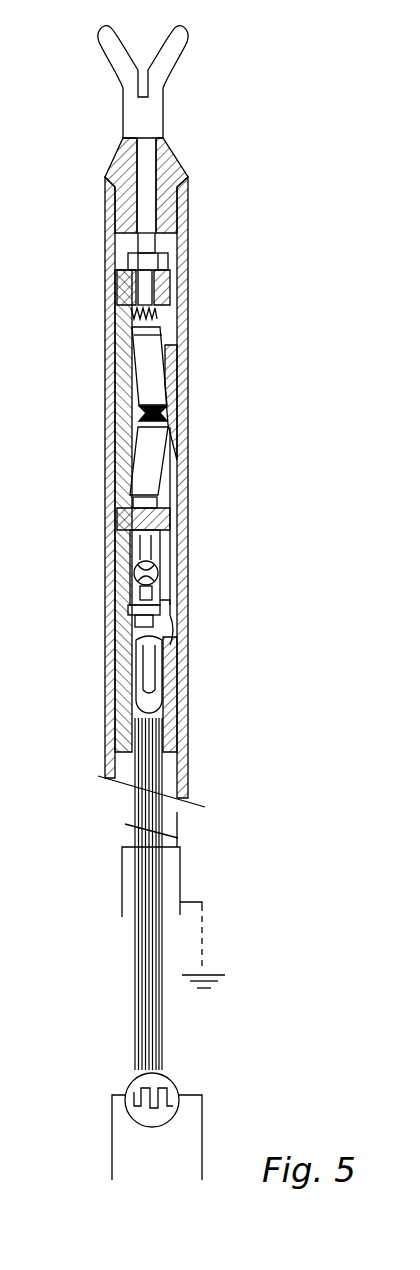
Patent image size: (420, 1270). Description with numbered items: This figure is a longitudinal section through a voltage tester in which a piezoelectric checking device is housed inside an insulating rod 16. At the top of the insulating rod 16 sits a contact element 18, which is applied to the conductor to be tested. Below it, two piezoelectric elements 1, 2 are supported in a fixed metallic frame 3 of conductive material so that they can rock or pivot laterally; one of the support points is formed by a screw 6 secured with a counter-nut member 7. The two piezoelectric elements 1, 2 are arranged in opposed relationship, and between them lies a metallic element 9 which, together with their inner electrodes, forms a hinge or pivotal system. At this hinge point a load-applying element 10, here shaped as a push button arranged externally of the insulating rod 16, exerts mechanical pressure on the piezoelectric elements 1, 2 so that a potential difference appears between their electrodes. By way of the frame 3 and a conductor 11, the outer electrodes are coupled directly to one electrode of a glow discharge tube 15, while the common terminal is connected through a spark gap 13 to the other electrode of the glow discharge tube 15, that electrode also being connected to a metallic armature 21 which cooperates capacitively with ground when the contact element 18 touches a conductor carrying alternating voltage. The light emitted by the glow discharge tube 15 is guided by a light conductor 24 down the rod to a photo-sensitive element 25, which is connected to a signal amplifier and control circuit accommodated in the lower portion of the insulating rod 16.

The contact element 18 is at (157, 120).
The screw 6 is at (150, 203).
The counter-nut member 7 is at (155, 267).
The metallic frame 3 is at (125, 288).
The piezoelectric element 1 is at (148, 352).
The metallic element 9 is at (138, 413).
The load-applying element 10 is at (180, 398).
The piezoelectric element 2 is at (148, 466).
The conductor 11 is at (173, 550).
The spark gap 13 is at (157, 588).
The insulated rod 16 is at (183, 663).
The glow discharge tube 15 is at (160, 703).
The light conductor 24 is at (157, 1015).
The metallic armature 21 is at (180, 875).
The photo-sensitive element 25 is at (172, 1082).